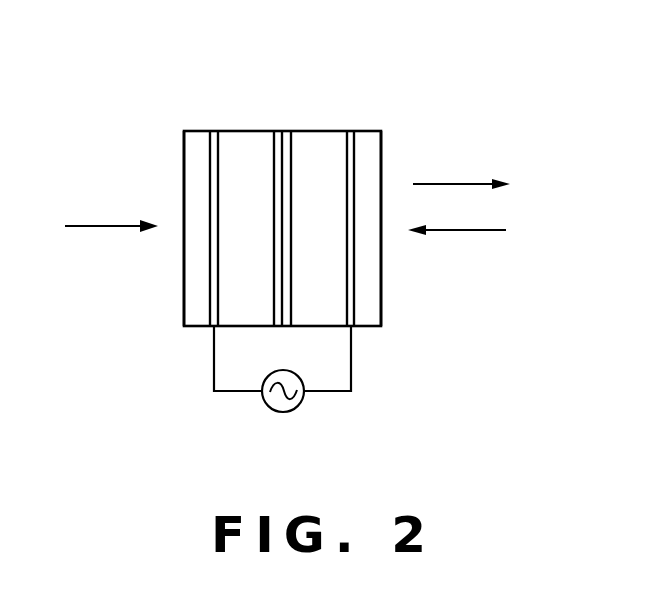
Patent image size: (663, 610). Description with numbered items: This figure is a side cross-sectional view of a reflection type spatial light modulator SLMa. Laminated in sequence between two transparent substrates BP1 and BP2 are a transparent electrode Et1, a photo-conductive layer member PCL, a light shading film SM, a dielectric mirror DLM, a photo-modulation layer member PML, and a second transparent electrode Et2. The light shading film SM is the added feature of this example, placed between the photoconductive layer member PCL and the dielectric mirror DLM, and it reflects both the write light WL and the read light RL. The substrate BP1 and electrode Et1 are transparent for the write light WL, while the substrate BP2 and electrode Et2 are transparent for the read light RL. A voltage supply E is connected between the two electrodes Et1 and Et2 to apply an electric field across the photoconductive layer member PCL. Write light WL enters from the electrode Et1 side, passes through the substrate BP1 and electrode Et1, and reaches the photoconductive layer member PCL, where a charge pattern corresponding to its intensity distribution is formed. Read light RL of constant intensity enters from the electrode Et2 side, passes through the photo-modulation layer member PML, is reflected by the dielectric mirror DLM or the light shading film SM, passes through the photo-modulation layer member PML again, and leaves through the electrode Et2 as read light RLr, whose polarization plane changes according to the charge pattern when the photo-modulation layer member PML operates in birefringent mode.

The reflection type spatial light modulator SLMa is at (174, 278).
The transparent substrate BP1 is at (195, 147).
The transparent substrate BP2 is at (370, 147).
The transparent electrode Et1 is at (215, 131).
The transparent electrode Et2 is at (350, 130).
The photo-conductive layer member PCL is at (240, 138).
The light shading film SM is at (278, 130).
The dielectric mirror DLM is at (290, 130).
The photo-modulation layer member PML is at (327, 133).
The write light WL is at (86, 227).
The read light RL is at (480, 233).
The emitted read light RLr is at (489, 189).
The voltage supply E is at (284, 413).